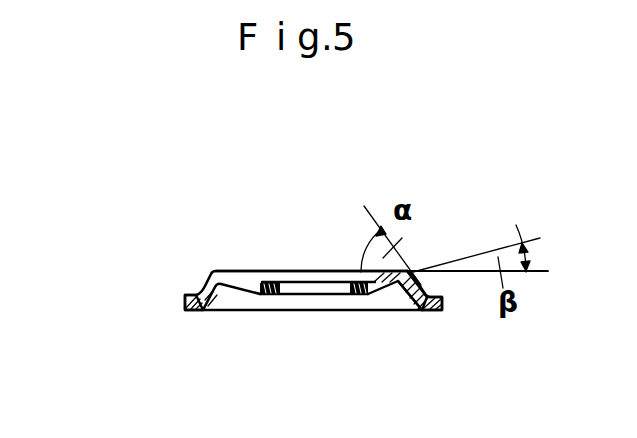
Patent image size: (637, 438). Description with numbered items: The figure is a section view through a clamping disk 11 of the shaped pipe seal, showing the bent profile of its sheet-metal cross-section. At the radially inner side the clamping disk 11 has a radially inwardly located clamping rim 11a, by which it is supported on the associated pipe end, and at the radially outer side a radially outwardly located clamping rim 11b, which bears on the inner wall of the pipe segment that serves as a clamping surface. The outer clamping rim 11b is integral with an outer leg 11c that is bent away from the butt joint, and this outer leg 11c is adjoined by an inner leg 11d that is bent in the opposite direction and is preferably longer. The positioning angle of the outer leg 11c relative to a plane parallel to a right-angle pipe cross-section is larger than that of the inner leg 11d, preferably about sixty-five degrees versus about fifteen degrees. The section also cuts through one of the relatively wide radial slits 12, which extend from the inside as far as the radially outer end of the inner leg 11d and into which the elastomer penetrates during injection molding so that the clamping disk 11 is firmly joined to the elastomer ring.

The clamping disk 11 is at (128, 305).
The radially inwardly located clamping rim 11a is at (280, 284).
The radially outwardly located clamping rim 11b is at (193, 313).
The outer leg 11c is at (410, 310).
The inner leg 11d is at (376, 288).
The radial slit 12 is at (242, 290).